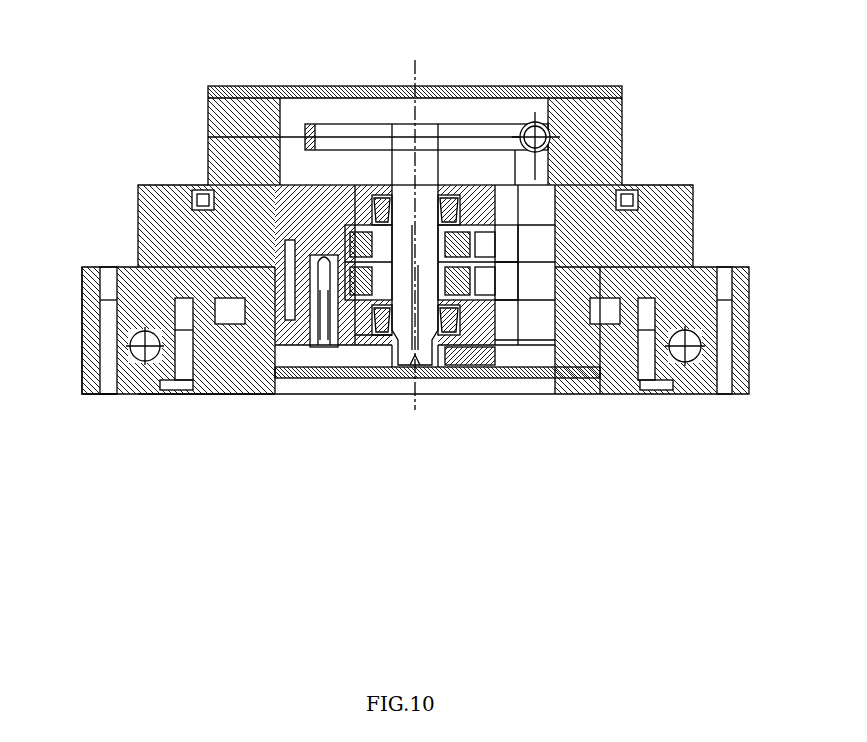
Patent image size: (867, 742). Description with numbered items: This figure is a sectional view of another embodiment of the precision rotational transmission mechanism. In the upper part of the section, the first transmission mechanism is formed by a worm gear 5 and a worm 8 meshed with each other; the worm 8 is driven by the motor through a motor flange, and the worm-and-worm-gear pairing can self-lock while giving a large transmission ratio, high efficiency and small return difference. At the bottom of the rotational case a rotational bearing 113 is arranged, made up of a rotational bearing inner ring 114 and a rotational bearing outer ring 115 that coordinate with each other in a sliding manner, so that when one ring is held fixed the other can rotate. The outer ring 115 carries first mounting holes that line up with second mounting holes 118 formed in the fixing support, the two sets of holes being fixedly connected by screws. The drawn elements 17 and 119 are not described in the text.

The worm gear 5 is at (446, 124).
The worm 8 is at (536, 122).
The guide post 17 is at (112, 278).
The rotational bearing 113 is at (686, 363).
The rotational bearing inner ring 114 is at (168, 394).
The rotational bearing outer ring 115 is at (80, 396).
The second mounting holes 118 is at (108, 394).
The support block 119 is at (245, 394).